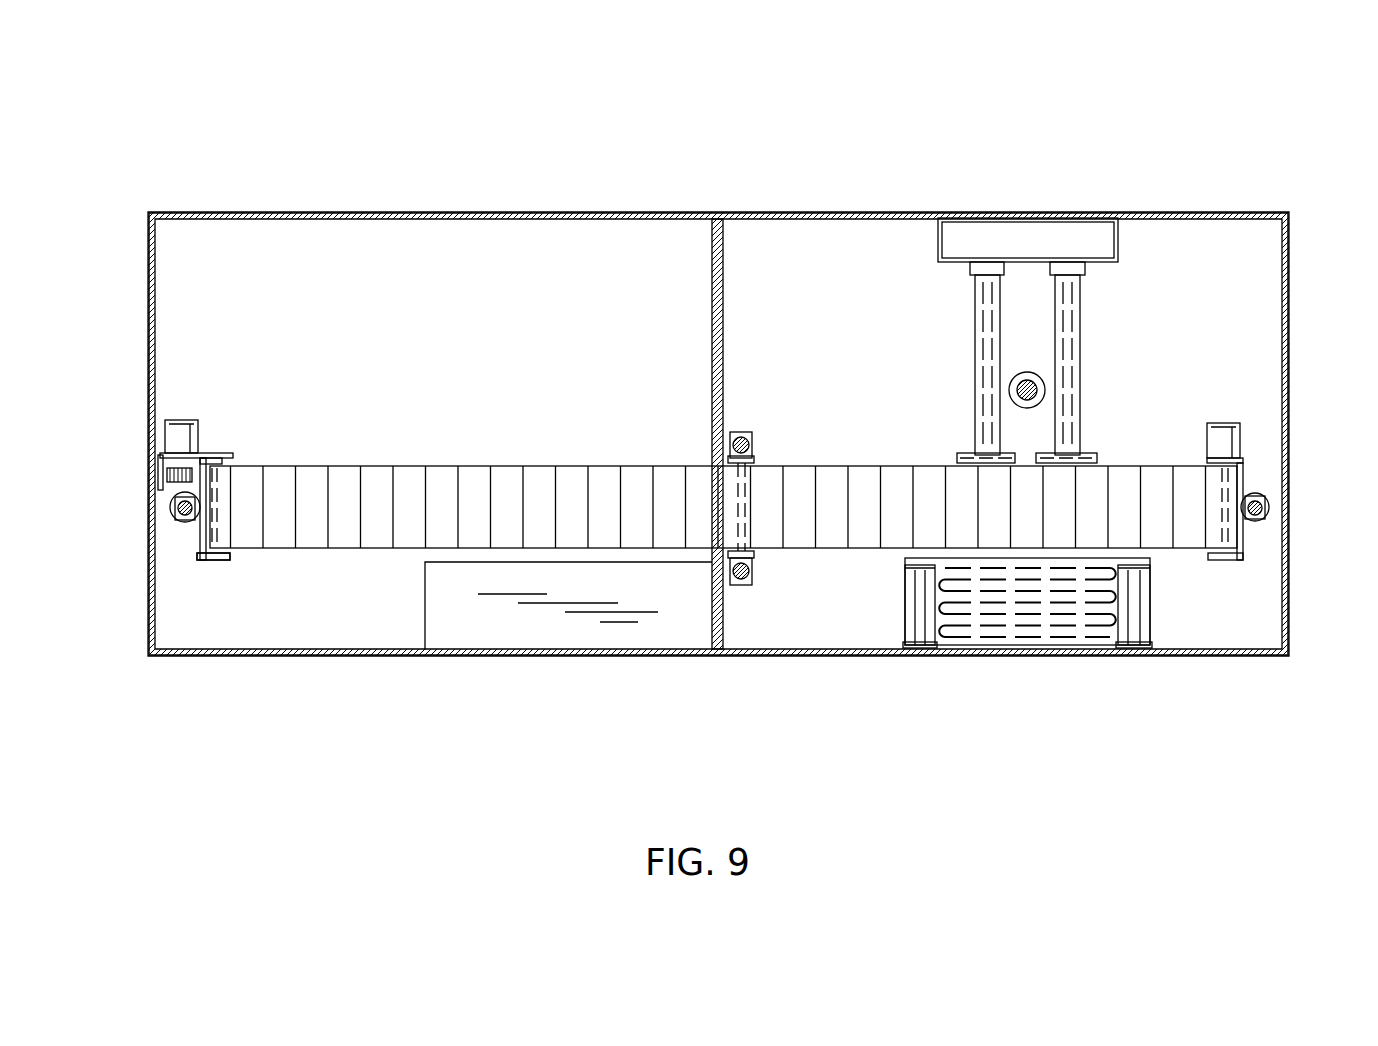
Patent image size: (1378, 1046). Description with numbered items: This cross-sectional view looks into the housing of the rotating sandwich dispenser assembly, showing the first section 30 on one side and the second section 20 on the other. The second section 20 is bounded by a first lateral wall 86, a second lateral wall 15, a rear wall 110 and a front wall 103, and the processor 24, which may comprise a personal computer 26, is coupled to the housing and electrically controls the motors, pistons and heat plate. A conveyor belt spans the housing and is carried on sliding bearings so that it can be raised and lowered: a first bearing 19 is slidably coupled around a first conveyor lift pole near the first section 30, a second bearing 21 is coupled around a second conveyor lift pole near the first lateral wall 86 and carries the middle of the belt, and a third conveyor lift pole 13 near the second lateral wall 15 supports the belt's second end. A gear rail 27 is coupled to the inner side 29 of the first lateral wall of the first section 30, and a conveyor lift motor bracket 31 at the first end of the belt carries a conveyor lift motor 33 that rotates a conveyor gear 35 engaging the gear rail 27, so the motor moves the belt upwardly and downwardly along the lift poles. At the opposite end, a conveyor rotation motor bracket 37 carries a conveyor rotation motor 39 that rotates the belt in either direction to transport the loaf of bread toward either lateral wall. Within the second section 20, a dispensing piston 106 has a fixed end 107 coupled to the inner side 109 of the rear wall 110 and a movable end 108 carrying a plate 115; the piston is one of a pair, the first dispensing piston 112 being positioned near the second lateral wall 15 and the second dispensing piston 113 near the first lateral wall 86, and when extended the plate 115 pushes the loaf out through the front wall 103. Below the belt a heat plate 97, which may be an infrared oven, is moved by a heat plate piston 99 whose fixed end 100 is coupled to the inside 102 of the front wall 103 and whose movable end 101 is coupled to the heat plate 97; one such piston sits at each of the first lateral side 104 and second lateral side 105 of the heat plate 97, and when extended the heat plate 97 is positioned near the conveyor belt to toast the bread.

The first section 30 is at (400, 140).
The second section 20 is at (1087, 255).
The first lateral wall 86 is at (1290, 276).
The second lateral wall 15 is at (723, 270).
The rear wall 110 is at (837, 213).
The first dispensing piston 112 is at (938, 298).
The second dispensing piston 113 is at (1102, 286).
The inner side 109 is at (1000, 230).
The dispensing piston 106 is at (1082, 338).
The movable end 108 is at (1080, 430).
The fixed end 107 is at (1070, 262).
The plate 115 is at (1040, 455).
The personal computer 26 is at (392, 590).
The second bearing 21 is at (750, 432).
The conveyor lift motor 33 is at (182, 420).
The gear rail 27 is at (165, 458).
The conveyor gear 35 is at (175, 483).
The first bearing 19 is at (173, 512).
The inner side 29 is at (155, 362).
The conveyor lift motor bracket 31 is at (192, 560).
The conveyor rotation motor 39 is at (1225, 423).
The conveyor rotation motor bracket 37 is at (1243, 562).
The third conveyor lift pole 13 is at (1262, 496).
The processor 24 is at (425, 607).
The inside 102 is at (812, 650).
The front wall 103 is at (1101, 656).
The first lateral side 104 is at (928, 577).
The fixed end 100 is at (1148, 638).
The heat plate 97 is at (957, 593).
The heat plate piston 99 is at (1145, 605).
The movable end 101 is at (1137, 555).
The second lateral side 105 is at (1110, 593).